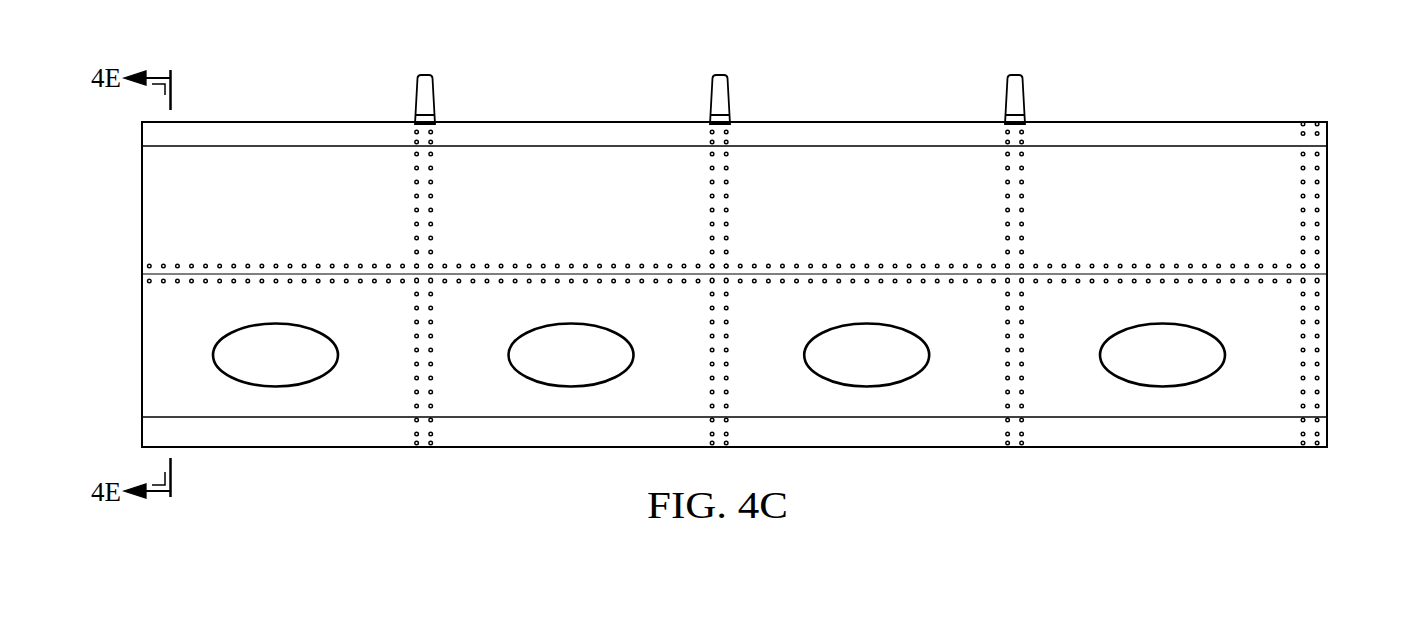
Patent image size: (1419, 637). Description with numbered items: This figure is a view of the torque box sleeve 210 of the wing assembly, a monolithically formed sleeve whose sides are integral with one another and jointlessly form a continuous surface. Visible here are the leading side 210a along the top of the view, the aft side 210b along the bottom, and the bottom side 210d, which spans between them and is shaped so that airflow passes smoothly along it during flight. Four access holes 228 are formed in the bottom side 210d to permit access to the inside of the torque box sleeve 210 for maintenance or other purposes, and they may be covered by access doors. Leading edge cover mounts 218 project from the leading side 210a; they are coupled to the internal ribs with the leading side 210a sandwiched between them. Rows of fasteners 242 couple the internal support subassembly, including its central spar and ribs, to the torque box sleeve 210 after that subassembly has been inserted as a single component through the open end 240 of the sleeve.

The torque box sleeve 210 is at (306, 162).
The leading side 210a is at (534, 131).
The aft side 210b is at (505, 437).
The bottom side 210d is at (160, 211).
The leading edge cover mount 218 is at (423, 74).
The access hole 228 is at (300, 386).
The open end 240 is at (1328, 186).
The fastener 242 is at (727, 196).